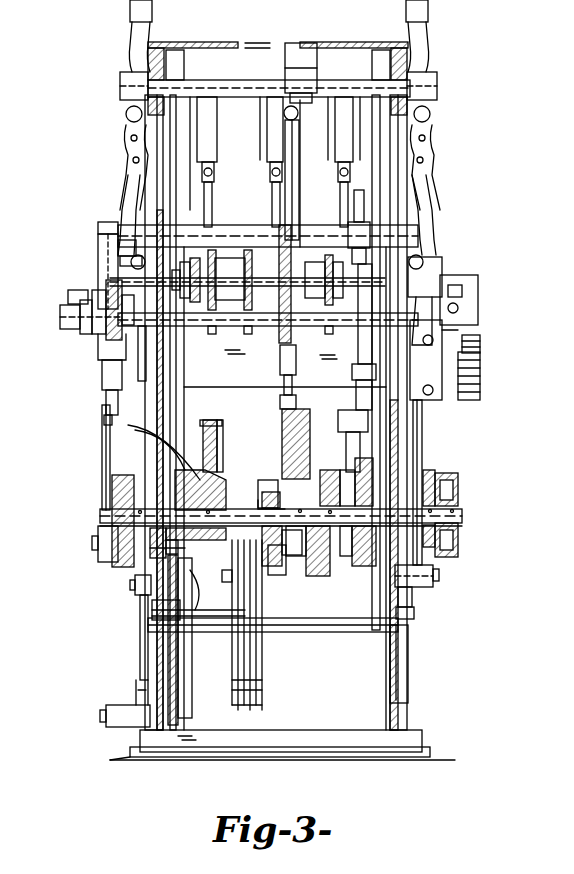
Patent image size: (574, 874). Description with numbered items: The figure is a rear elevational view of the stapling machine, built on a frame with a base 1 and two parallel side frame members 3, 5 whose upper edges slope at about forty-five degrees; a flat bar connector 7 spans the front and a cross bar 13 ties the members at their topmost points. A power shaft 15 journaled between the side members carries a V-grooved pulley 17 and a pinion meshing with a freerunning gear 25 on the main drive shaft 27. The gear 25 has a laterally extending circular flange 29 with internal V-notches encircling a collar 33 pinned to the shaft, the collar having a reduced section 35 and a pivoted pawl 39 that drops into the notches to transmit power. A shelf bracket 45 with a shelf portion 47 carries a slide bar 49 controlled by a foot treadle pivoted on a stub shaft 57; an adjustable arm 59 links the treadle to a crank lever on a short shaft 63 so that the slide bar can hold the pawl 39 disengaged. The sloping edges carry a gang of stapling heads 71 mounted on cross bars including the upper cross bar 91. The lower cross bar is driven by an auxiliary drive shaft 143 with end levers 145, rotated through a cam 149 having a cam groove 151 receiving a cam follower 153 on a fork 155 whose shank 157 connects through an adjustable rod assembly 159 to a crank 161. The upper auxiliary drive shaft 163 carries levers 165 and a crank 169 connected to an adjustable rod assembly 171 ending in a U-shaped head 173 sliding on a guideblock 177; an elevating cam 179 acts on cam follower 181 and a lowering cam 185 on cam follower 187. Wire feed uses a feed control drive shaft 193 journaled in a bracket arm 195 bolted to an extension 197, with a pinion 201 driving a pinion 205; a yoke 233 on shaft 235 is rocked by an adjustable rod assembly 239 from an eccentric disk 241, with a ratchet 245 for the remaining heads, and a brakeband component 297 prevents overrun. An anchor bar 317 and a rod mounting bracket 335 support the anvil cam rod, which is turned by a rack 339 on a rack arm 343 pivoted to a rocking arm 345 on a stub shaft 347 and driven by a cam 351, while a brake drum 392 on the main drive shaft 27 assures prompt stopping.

The base 1 is at (318, 738).
The side frame member 3 is at (150, 450).
The side frame member 5 is at (410, 672).
The flat bar connector 7 is at (222, 366).
The cross bar 13 is at (330, 44).
The power shaft 15 is at (336, 622).
The pulley 17 is at (264, 693).
The freerunning gear 25 is at (225, 420).
The main drive shaft 27 is at (145, 508).
The laterally extending circular flange 29 is at (212, 475).
The collar 33 is at (194, 460).
The reduced section 35 is at (156, 446).
The pawl 39 is at (98, 518).
The shelf bracket 45 is at (185, 640).
The shelf portion 47 is at (206, 622).
The slide bar 49 is at (160, 555).
The stub shaft 57 is at (120, 708).
The adjustable arm 59 is at (140, 652).
The short shaft 63 is at (136, 590).
The stapling heads 71 is at (268, 172).
The upper cross bar 91 is at (253, 140).
The auxiliary drive shaft 143 is at (262, 212).
The lever 145 is at (132, 198).
The cam 149 is at (370, 565).
The cam groove 151 is at (410, 594).
The cam follower 153 is at (365, 478).
The fork 155 is at (332, 556).
The shank 157 is at (346, 412).
The adjustable rod assembly 159 is at (358, 372).
The crank 161 is at (360, 224).
The auxiliary drive shaft 163 is at (212, 86).
The lever 165 is at (131, 42).
The crank 169 is at (306, 78).
The adjustable rod assembly 171 is at (299, 212).
The U-shaped head 173 is at (265, 479).
The guideblock 177 is at (262, 500).
The cam 179 is at (324, 570).
The cam follower 181 is at (338, 432).
The cam 185 is at (274, 494).
The cam follower 187 is at (270, 570).
The feed control drive shaft 193 is at (226, 288).
The bracket arm 195 is at (98, 247).
The extension 197 is at (100, 230).
The pinion 201 is at (106, 365).
The pinion 205 is at (112, 258).
The yoke 233 is at (104, 355).
The shaft 235 is at (230, 320).
The adjustable rod assembly 239 is at (102, 448).
The disk 241 is at (108, 562).
The ratchet 245 is at (78, 330).
The brakeband component 297 is at (143, 362).
The anchor bar 317 is at (478, 344).
The rod mounting bracket 335 is at (476, 276).
The rack 339 is at (430, 285).
The rack arm 343 is at (450, 376).
The rocking arm 345 is at (422, 462).
The stub shaft 347 is at (436, 578).
The cam 351 is at (460, 538).
The brake drum 392 is at (460, 482).